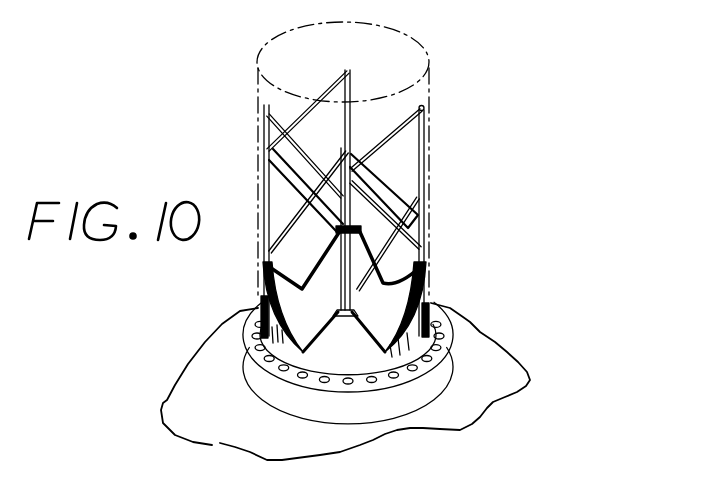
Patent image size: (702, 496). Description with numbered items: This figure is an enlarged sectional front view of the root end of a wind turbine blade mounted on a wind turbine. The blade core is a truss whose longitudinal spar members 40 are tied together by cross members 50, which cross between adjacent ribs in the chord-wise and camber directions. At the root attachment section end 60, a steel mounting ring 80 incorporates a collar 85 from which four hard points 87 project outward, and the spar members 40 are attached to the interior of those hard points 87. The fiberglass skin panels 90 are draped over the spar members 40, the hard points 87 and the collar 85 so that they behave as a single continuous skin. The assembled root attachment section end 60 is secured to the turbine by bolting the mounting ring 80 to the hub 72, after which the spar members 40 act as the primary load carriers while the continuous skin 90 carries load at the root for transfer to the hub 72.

The spar member 40 is at (350, 76).
The cross member 50 is at (374, 48).
The root attachment section end 60 is at (456, 259).
The hub 72 is at (470, 323).
The steel mounting ring 80 is at (255, 330).
The collar 85 is at (442, 275).
The hard point 87 is at (358, 268).
The skin panel 90 is at (430, 86).